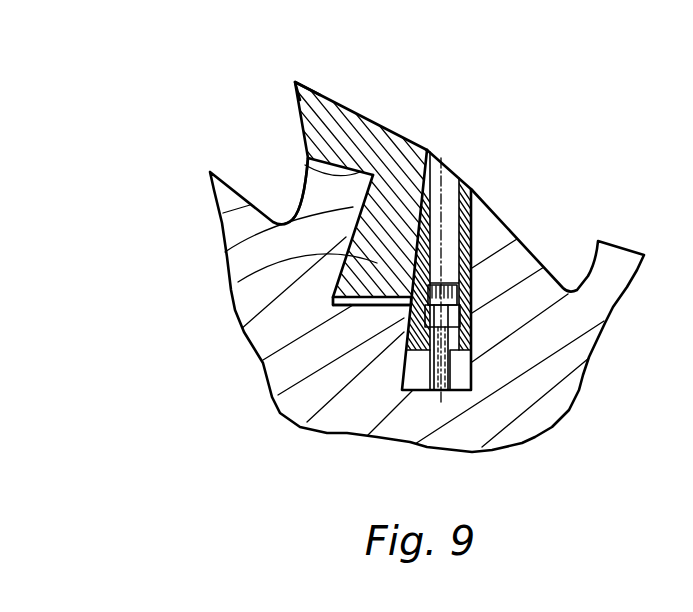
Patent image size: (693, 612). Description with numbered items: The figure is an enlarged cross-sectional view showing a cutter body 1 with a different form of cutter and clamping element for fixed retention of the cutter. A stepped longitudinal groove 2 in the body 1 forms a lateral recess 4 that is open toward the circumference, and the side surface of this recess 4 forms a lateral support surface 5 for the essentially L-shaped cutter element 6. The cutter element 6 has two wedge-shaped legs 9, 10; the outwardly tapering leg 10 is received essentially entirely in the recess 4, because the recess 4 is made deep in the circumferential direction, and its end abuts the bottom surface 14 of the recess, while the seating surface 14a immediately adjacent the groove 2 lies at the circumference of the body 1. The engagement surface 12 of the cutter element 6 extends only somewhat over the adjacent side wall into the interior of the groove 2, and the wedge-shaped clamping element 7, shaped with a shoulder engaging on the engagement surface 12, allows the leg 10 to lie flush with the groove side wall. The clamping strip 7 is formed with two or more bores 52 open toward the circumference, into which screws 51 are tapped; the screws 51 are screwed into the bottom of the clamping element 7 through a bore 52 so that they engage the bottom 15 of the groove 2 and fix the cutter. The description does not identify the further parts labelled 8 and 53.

The body 1 is at (553, 372).
The longitudinal groove 2 is at (423, 380).
The lateral recess 4 is at (372, 306).
The lateral support surface 5 is at (357, 206).
The cutter element 6 is at (432, 135).
The clamping element 7 is at (473, 200).
The cutting edge 8 is at (296, 78).
The leg 9 is at (365, 130).
The leg 10 is at (343, 258).
The engagement surface 12 is at (333, 292).
The bottom surface 14 is at (343, 303).
The seating surface 14a is at (305, 165).
The bottom of the groove 15 is at (452, 382).
The screws 51 is at (475, 283).
The bores 52 is at (455, 187).
The sleeve nut 53 is at (472, 342).